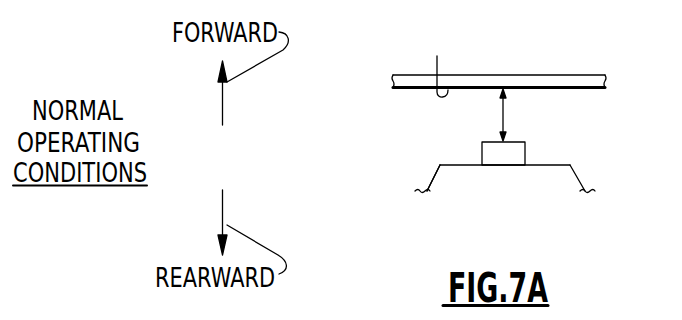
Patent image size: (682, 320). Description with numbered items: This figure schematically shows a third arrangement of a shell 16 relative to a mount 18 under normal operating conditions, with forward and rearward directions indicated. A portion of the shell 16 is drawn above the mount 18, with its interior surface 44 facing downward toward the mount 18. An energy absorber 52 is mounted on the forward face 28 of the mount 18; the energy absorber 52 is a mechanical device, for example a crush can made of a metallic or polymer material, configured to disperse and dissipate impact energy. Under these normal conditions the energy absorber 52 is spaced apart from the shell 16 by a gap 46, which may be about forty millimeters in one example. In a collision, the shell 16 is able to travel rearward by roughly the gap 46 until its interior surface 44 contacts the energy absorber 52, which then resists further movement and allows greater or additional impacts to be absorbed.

The shell 16 is at (562, 82).
The interior surface 44 is at (437, 56).
The gap 46 is at (503, 118).
The energy absorber 52 is at (513, 153).
The mount 18 is at (600, 165).
The forward face 28 is at (466, 164).